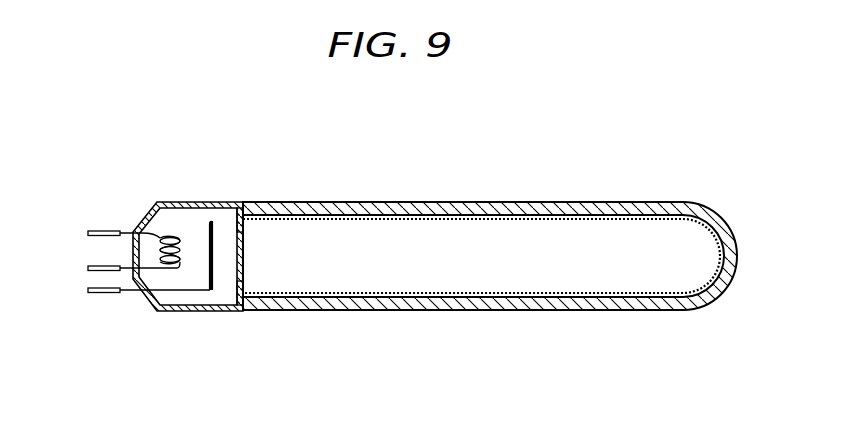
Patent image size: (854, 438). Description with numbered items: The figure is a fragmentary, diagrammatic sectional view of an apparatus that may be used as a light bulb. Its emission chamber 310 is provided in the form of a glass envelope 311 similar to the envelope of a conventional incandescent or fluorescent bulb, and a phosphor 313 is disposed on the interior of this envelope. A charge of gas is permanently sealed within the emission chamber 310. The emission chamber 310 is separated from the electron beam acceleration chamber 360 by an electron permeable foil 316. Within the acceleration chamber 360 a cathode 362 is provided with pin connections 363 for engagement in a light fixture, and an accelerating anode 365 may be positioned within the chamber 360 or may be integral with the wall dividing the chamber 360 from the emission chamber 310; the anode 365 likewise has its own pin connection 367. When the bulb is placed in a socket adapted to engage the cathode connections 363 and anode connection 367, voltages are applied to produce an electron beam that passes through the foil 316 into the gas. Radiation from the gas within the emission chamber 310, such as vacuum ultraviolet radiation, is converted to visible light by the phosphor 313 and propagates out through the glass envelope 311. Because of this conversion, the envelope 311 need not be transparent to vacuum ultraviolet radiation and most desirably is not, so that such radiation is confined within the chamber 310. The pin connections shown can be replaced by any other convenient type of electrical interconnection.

The emission chamber 310 is at (487, 210).
The glass envelope 311 is at (600, 205).
The phosphor 313 is at (638, 219).
The electron permeable foil 316 is at (244, 255).
The electron beam acceleration chamber 360 is at (203, 201).
The cathode 362 is at (172, 236).
The pin connections 363 is at (98, 230).
The accelerating anode 365 is at (213, 277).
The pin connection 367 is at (96, 294).